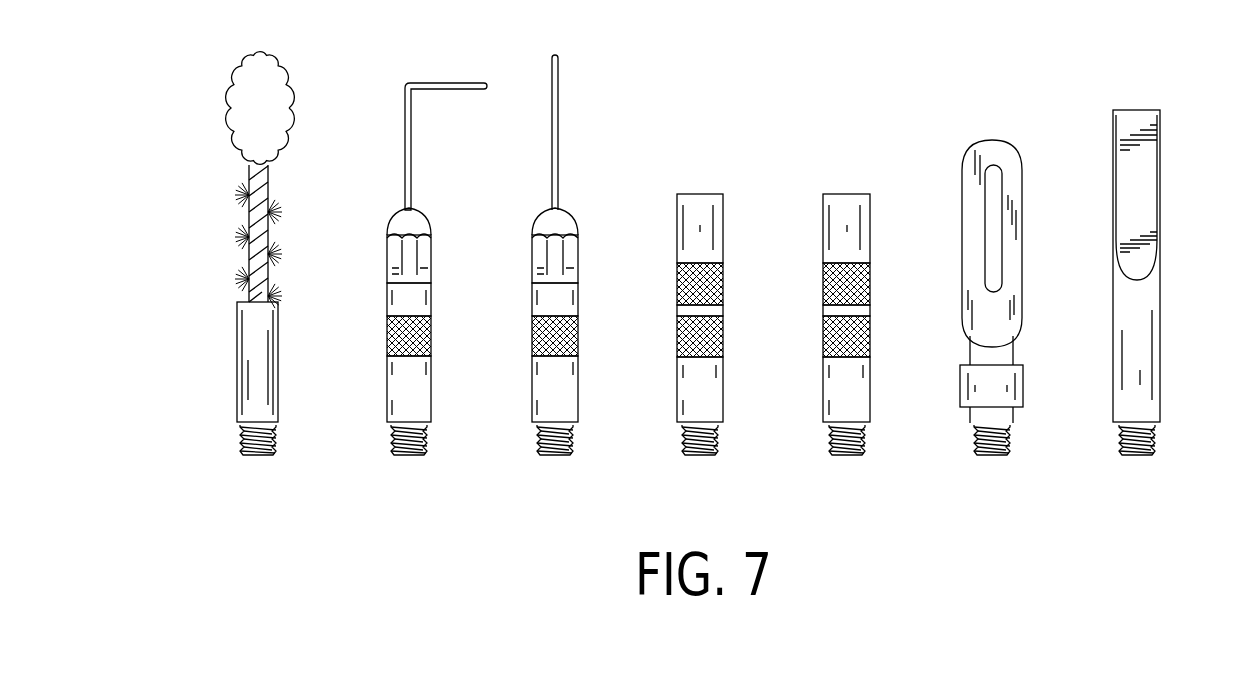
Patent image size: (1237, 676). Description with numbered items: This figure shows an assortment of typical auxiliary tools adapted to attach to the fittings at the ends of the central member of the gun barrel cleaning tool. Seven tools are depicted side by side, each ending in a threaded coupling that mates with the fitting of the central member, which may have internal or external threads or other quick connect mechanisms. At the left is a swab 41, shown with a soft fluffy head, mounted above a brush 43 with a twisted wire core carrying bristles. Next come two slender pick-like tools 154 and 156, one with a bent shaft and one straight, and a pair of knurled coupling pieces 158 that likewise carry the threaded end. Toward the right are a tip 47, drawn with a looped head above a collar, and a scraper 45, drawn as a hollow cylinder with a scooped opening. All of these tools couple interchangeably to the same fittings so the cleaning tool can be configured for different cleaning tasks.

The swab 41 is at (240, 92).
The brush 43 is at (243, 244).
The bent pick tool 154 is at (390, 250).
The straight pick tool 156 is at (578, 250).
The knurled handle adapters 158 is at (832, 192).
The tip 47 is at (992, 140).
The scraper 45 is at (1140, 110).